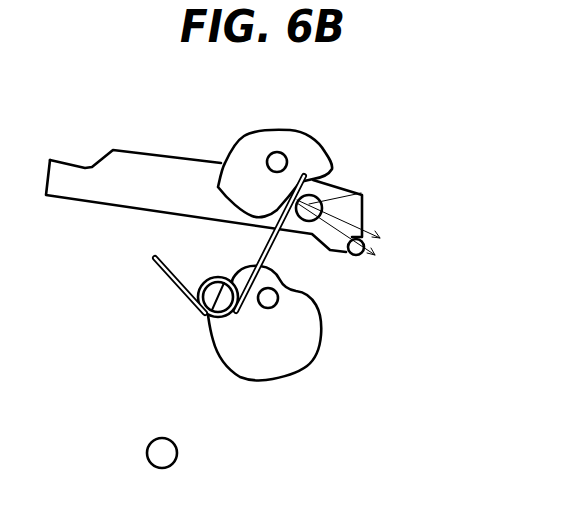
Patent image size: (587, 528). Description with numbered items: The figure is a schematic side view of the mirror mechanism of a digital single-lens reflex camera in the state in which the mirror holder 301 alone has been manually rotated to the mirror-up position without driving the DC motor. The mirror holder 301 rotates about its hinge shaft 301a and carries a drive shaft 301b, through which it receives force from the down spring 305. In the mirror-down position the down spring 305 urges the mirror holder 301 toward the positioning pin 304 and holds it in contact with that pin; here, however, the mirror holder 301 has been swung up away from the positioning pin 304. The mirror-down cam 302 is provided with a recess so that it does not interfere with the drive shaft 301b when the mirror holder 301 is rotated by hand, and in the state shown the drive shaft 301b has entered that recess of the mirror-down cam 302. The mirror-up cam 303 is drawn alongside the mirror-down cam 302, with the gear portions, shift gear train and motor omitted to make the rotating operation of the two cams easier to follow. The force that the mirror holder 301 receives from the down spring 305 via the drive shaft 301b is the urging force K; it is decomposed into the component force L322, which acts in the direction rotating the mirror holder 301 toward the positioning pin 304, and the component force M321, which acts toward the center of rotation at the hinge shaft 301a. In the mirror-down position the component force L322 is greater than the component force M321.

The mirror holder 301 is at (168, 168).
The hinge shaft 301a is at (355, 257).
The drive shaft 301b is at (360, 194).
The mirror-down cam 302 is at (300, 140).
The mirror-up cam 303 is at (318, 356).
The positioning pin 304 is at (155, 466).
The down spring 305 is at (174, 281).
The component force L322 is at (351, 182).
The component force M321 is at (374, 243).
The urging force K is at (352, 226).